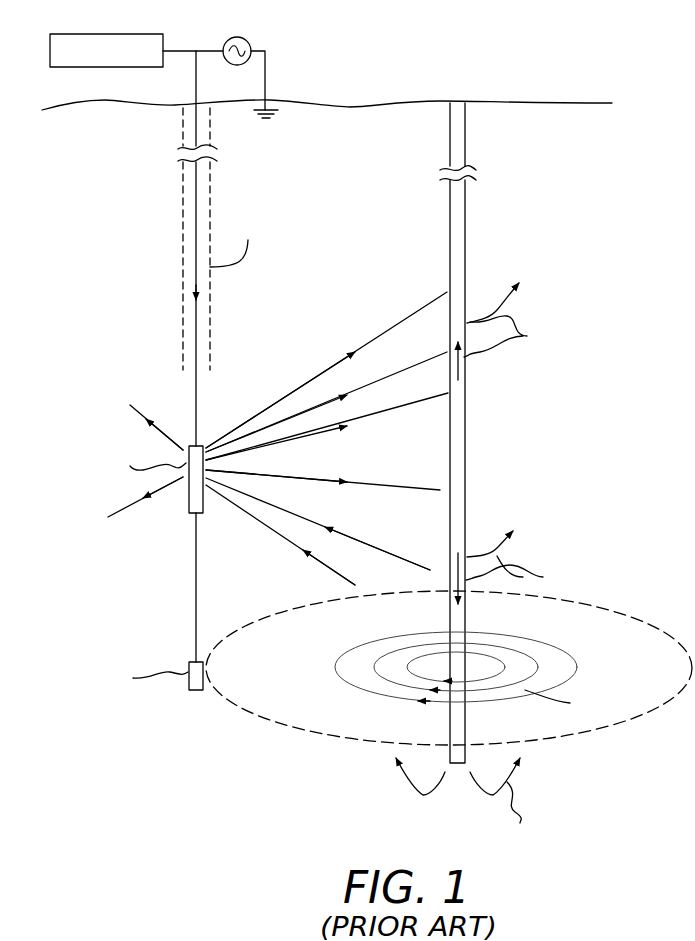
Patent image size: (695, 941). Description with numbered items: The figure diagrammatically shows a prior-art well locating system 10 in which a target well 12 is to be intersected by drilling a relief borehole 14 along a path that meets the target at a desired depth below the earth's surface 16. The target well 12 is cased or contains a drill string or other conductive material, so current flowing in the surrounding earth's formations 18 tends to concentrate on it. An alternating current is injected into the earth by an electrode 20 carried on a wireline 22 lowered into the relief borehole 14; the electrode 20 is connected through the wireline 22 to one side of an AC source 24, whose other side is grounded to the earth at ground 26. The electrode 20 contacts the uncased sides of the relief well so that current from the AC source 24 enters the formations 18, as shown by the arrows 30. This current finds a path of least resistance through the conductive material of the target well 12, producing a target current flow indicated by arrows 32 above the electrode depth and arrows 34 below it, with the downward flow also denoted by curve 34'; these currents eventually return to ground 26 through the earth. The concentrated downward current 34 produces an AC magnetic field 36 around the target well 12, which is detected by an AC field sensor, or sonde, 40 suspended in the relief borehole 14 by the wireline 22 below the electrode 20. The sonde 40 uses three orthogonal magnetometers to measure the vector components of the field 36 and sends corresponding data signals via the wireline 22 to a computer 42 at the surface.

The well locating system 10 is at (121, 378).
The target well 12 is at (466, 220).
The relief borehole 14 is at (182, 200).
The earth's surface 16 is at (567, 101).
The earth's formations 18 is at (632, 428).
The electrode 20 is at (198, 445).
The wireline 22 is at (197, 328).
The AC source 24 is at (248, 40).
The ground 26 is at (268, 101).
The arrows 30 is at (312, 432).
The target current flow above electrode 32 is at (463, 375).
The target current flow below electrode 34 is at (536, 578).
The curve 34' is at (682, 513).
The AC magnetic field 36 is at (370, 680).
The AC field sensor 40 is at (188, 662).
The computer 42 is at (107, 33).